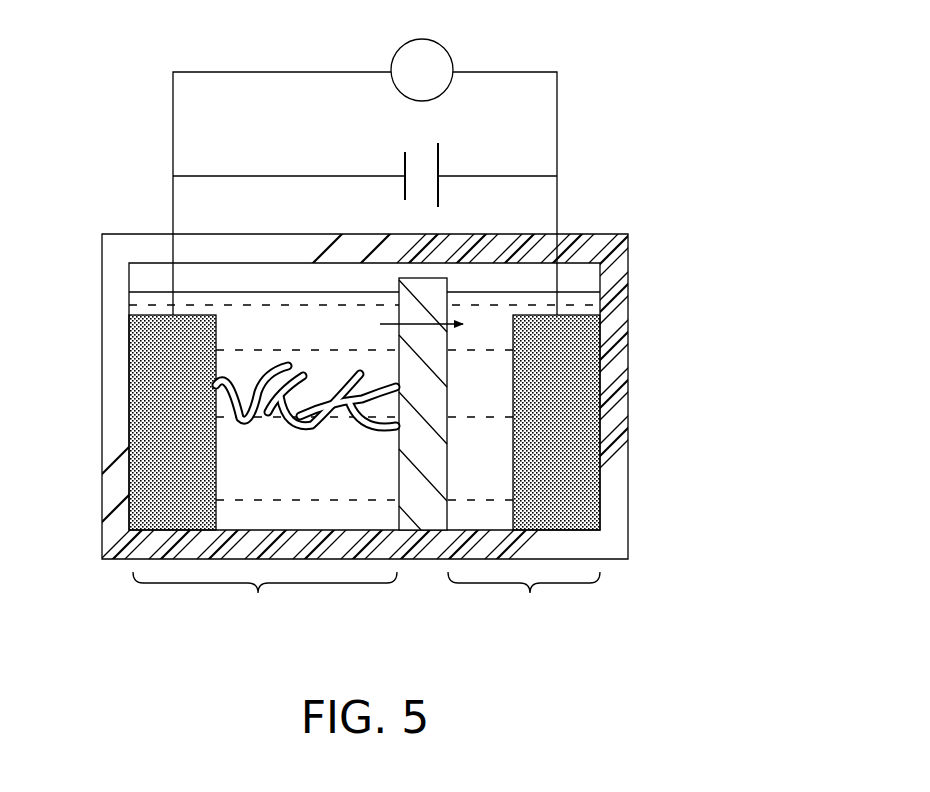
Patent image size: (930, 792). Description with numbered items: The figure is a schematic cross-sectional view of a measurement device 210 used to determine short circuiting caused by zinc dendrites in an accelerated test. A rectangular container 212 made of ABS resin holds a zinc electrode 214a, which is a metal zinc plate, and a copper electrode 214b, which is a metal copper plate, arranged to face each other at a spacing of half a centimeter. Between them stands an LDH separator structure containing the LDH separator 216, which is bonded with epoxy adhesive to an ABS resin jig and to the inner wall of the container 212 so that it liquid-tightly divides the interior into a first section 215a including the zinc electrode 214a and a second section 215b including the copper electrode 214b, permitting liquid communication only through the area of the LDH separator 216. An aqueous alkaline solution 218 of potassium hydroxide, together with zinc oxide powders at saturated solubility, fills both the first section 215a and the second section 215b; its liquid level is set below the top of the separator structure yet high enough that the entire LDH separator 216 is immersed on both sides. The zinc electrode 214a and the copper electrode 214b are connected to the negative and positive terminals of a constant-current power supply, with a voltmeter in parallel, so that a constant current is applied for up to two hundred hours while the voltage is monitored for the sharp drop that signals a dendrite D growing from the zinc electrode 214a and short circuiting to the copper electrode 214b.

The measurement device 210 is at (419, 329).
The rectangular container 212 is at (613, 296).
The zinc electrode 214a is at (160, 453).
The copper electrode 214b is at (555, 445).
The first section 215a is at (265, 599).
The second section 215b is at (524, 599).
The LDH separator 216 is at (427, 515).
The aqueous alkaline solution 218 is at (235, 332).
The dendrite D is at (252, 369).